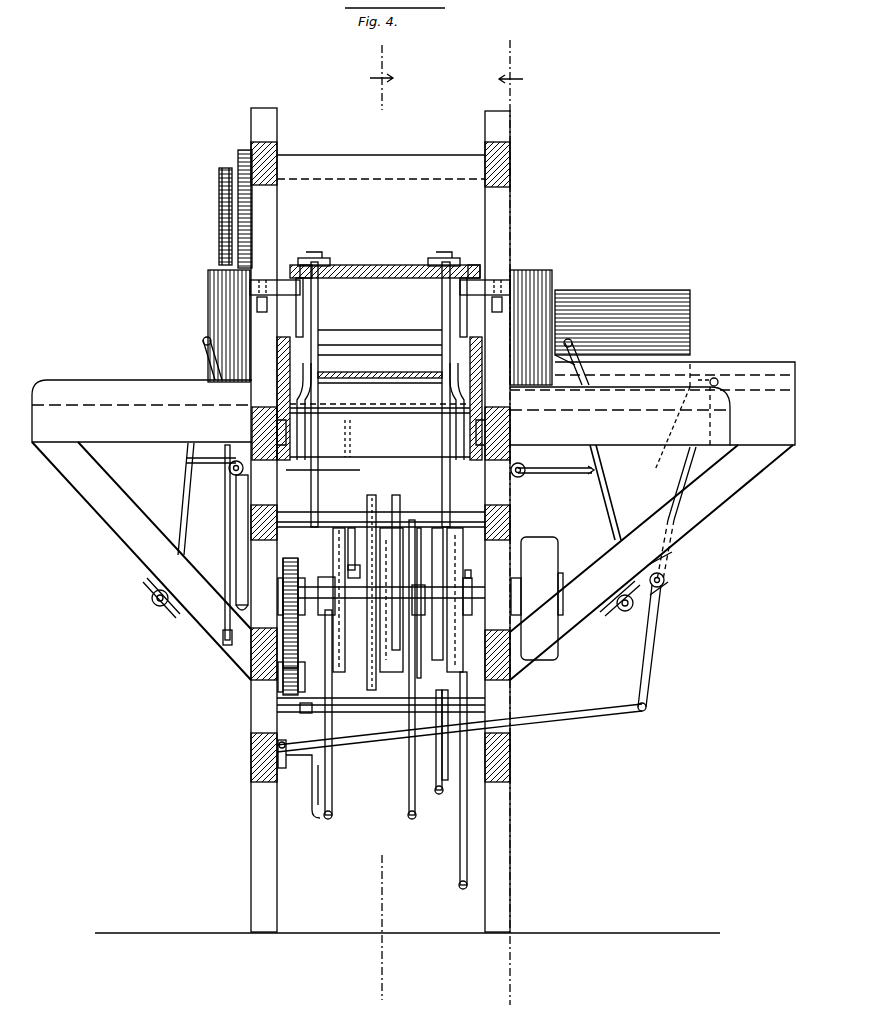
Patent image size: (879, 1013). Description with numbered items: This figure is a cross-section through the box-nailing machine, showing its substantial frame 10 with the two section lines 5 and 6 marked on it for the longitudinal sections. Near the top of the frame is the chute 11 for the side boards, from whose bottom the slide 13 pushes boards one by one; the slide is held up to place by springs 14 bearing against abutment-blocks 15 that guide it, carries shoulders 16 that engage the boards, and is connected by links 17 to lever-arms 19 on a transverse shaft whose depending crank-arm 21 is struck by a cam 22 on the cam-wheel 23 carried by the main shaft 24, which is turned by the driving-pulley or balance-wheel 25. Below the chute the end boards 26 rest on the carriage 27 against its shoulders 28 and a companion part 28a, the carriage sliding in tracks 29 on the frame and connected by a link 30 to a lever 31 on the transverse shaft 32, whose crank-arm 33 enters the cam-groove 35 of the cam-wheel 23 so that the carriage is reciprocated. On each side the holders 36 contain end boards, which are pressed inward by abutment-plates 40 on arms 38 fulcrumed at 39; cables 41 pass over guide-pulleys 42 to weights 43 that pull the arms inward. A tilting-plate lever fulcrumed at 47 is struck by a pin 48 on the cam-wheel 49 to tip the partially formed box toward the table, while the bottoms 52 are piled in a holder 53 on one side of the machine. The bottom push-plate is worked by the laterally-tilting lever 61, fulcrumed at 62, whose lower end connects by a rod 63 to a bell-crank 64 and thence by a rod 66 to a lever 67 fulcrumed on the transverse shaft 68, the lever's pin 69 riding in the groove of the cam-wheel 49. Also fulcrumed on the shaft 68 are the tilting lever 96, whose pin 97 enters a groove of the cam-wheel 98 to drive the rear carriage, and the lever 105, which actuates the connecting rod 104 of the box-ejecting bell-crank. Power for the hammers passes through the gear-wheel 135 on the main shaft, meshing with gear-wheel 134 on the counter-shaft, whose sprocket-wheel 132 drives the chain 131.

The frame 10 is at (278, 152).
The chute 11 is at (378, 221).
The slide 13 is at (368, 265).
The springs 14 is at (259, 280).
The abutment-blocks 15 is at (290, 337).
The shoulders 16 is at (418, 590).
The links 17 is at (322, 258).
The lever-arms 19 is at (318, 335).
The crank-arm 21 is at (415, 494).
The cam 22 is at (398, 570).
The cam-wheel 23 is at (390, 672).
The main shaft 24 is at (340, 600).
The driving-pulley or balance-wheel 25 is at (537, 598).
The end boards 26 is at (290, 265).
The carriage 27 is at (380, 366).
The shoulders 28 is at (450, 330).
The bar 28a is at (300, 330).
The tracks 29 is at (252, 430).
The link 30 is at (310, 365).
The lever 31 is at (310, 460).
The transverse shaft 32 is at (322, 512).
The crank-arm 33 is at (355, 565).
The cam-groove 35 is at (388, 650).
The chutes or holders 36 is at (125, 385).
The arms 38 is at (176, 480).
The fulcrum 39 is at (160, 606).
The abutment-plates 40 is at (205, 322).
The cables 41 is at (210, 464).
The guide-pulleys 42 is at (228, 475).
The weights 43 is at (238, 605).
The fulcrum 47 is at (372, 455).
The pin 48 is at (318, 580).
The cam-wheel 49 is at (340, 672).
The bottoms 52 is at (660, 291).
The holder 53 is at (730, 360).
The laterally-tilting lever 61 is at (690, 460).
The fulcrum 62 is at (665, 582).
The rod 63 is at (587, 712).
The bell-crank 64 is at (284, 768).
The rod 66 is at (312, 795).
The lever 67 is at (332, 790).
The transverse shaft 68 is at (312, 712).
The pin 69 is at (300, 605).
The tilting lever 96 is at (460, 822).
The pin 97 is at (472, 592).
The cam-wheel 98 is at (464, 600).
The connecting rod 104 is at (439, 793).
The lever 105 is at (440, 758).
The chain 131 is at (226, 550).
The sprocket-wheel 132 is at (226, 645).
The gear-wheel 134 is at (283, 690).
The gear-wheel 135 is at (283, 568).
The section line 5 5 is at (511, 518).
The section line 6 6 is at (382, 528).